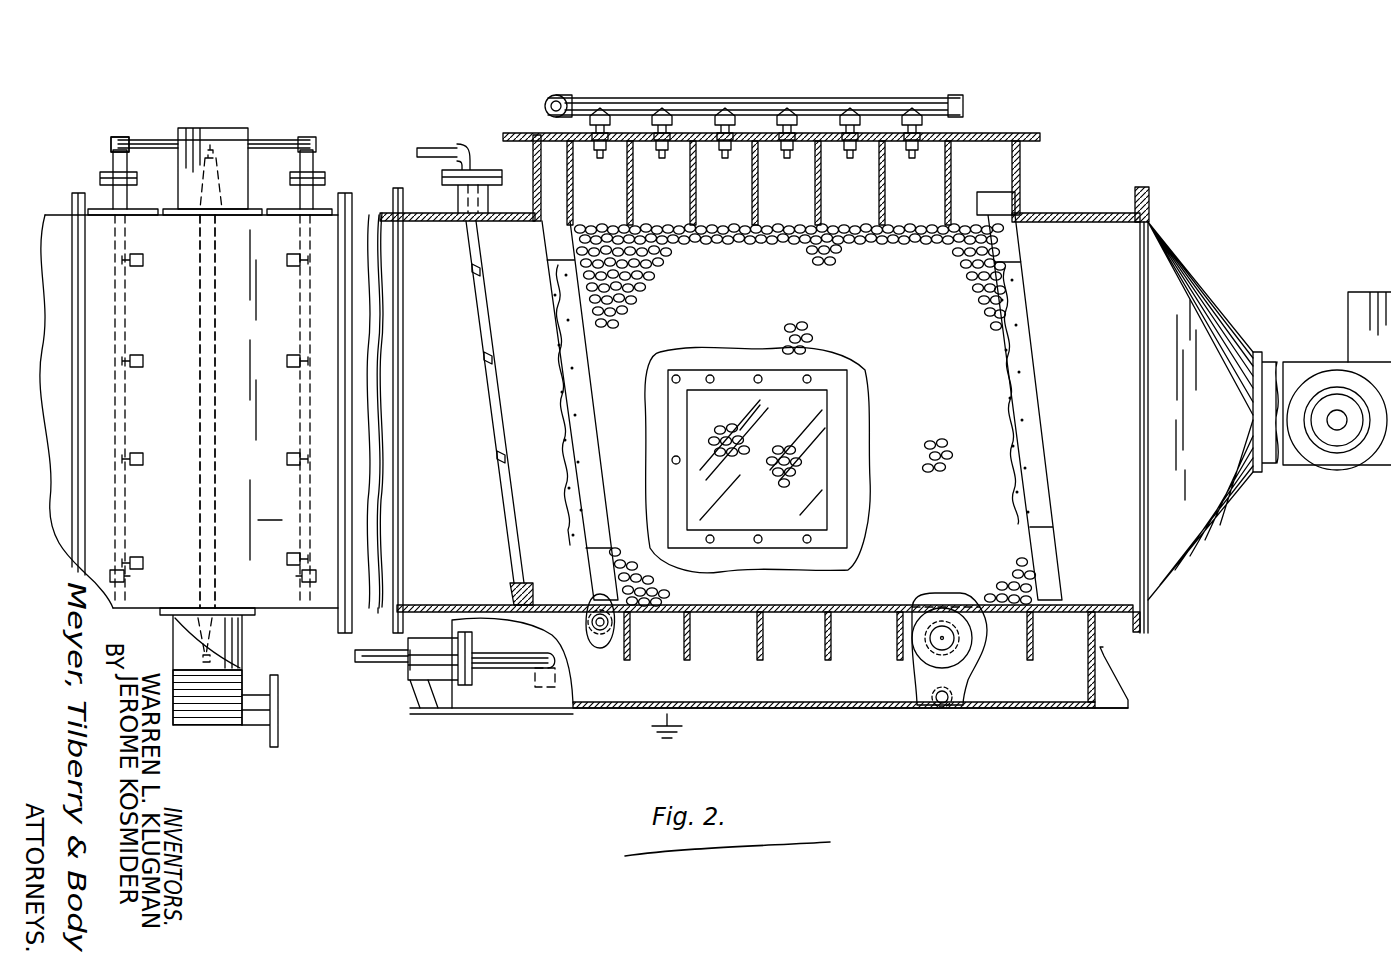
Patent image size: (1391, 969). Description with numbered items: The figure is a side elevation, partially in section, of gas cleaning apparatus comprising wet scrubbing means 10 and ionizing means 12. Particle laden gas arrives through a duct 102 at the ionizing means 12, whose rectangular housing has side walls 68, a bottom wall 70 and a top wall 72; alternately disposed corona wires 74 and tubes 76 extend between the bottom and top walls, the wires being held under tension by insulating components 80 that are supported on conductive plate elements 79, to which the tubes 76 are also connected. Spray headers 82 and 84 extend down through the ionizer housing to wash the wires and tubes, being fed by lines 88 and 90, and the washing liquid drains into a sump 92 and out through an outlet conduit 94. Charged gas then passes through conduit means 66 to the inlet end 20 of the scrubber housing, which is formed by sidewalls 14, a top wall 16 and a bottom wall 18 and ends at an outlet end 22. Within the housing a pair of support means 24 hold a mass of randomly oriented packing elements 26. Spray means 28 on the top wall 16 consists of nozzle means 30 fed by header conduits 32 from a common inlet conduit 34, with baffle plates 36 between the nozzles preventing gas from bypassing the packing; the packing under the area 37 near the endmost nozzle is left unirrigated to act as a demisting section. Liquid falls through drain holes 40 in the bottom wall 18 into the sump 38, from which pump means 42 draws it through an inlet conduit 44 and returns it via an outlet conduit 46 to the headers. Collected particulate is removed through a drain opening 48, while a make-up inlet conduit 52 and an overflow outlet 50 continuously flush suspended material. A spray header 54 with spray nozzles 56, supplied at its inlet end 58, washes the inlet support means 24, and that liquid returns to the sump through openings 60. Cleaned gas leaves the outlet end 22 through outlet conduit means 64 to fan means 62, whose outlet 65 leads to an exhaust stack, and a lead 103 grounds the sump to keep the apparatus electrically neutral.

The wet scrubbing means 10 is at (1046, 112).
The ionizing means 12 is at (85, 162).
The sidewalls 14 is at (1078, 270).
The top wall 16 is at (1097, 215).
The bottom wall 18 is at (1110, 618).
The inlet end 20 is at (432, 240).
The outlet end 22 is at (1115, 280).
The support means 24 is at (598, 352).
The packing elements 26 is at (800, 330).
The spray means 28 is at (940, 90).
The nozzle means 30 is at (600, 158).
The header conduits 32 is at (803, 99).
The common inlet conduit 34 is at (546, 103).
The baffle plates 36 is at (628, 200).
The area 37 is at (964, 165).
The sump 38 is at (775, 692).
The drain holes 40 is at (656, 615).
The pump means 42 is at (440, 690).
The inlet conduit 44 is at (535, 686).
The outlet conduit 46 is at (385, 666).
The drain opening 48 is at (942, 705).
The overflow outlet 50 is at (940, 640).
The make-up inlet conduit 52 is at (600, 632).
The spray header 54 is at (468, 272).
The spray nozzles 56 is at (488, 272).
The inlet end 58 is at (428, 146).
The openings 60 is at (476, 604).
The fan means 62 is at (1346, 473).
The outlet conduit means 64 is at (1215, 325).
The outlet 65 is at (1348, 324).
The conduit means 66 is at (380, 612).
The side walls 68 is at (273, 508).
The bottom wall 70 is at (290, 610).
The top wall 72 is at (140, 212).
The corona wires 74 is at (205, 404).
The tubes 76 is at (200, 325).
The conductive plate elements 79 is at (240, 652).
The insulating components 80 is at (222, 190).
The spray header 82 is at (127, 296).
The spray header 84 is at (300, 316).
The line 88 is at (130, 158).
The line 90 is at (296, 130).
The sump 92 is at (205, 722).
The outlet conduit 94 is at (258, 727).
The duct 102 is at (46, 218).
The lead 103 is at (705, 735).